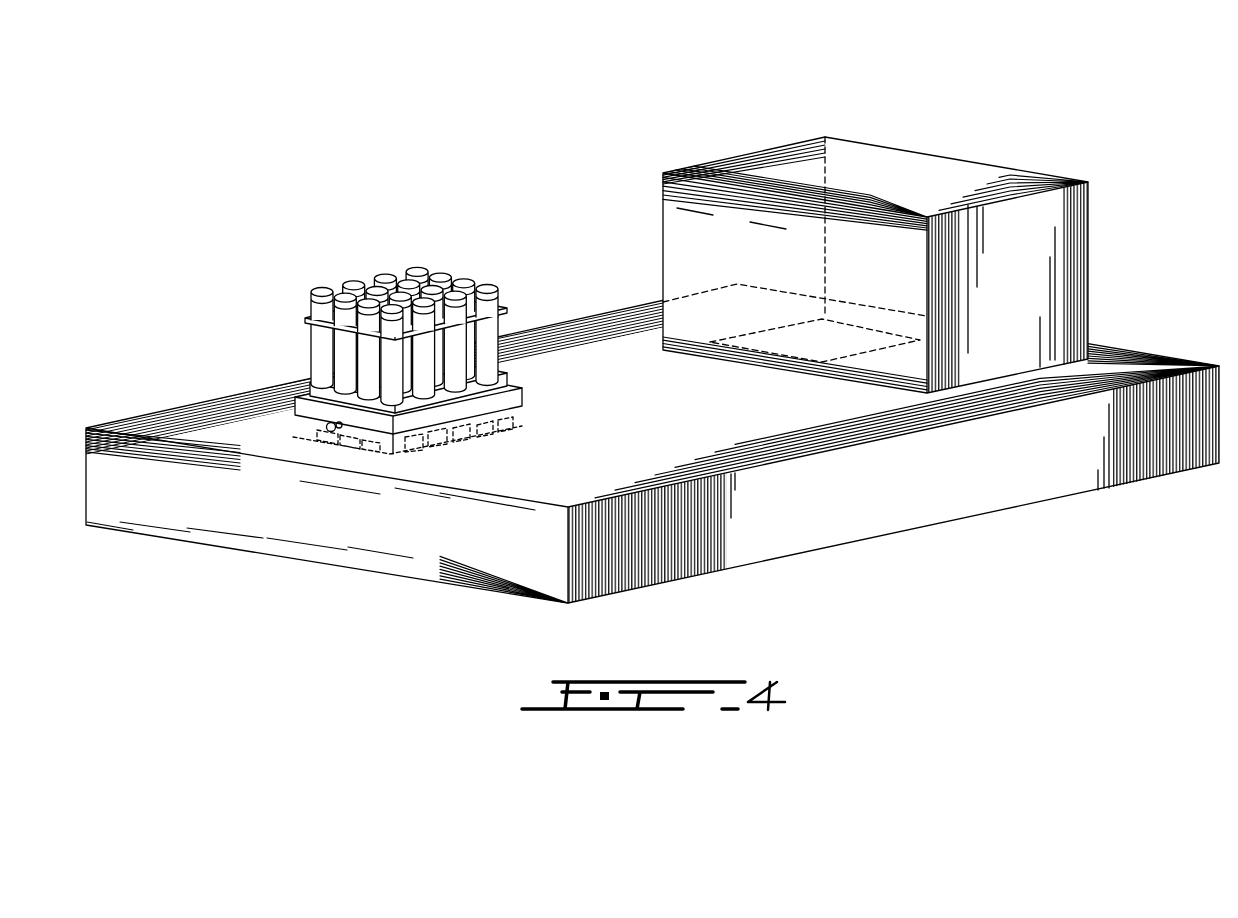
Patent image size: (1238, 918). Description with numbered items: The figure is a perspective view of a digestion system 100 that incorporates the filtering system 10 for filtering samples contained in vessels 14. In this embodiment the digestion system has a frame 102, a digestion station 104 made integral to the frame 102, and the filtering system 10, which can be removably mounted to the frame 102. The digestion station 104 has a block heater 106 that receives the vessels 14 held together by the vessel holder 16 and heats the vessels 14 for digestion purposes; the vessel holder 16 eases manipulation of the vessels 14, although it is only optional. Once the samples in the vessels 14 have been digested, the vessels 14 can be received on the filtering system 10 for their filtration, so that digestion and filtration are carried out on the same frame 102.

The filtering system 10 is at (369, 301).
The vessels 14 is at (365, 288).
The vessel holder 16 is at (314, 321).
The battery testing system 100 is at (652, 304).
The frame 102 is at (160, 422).
The digestion station 104 is at (921, 199).
The block heater 106 is at (857, 333).